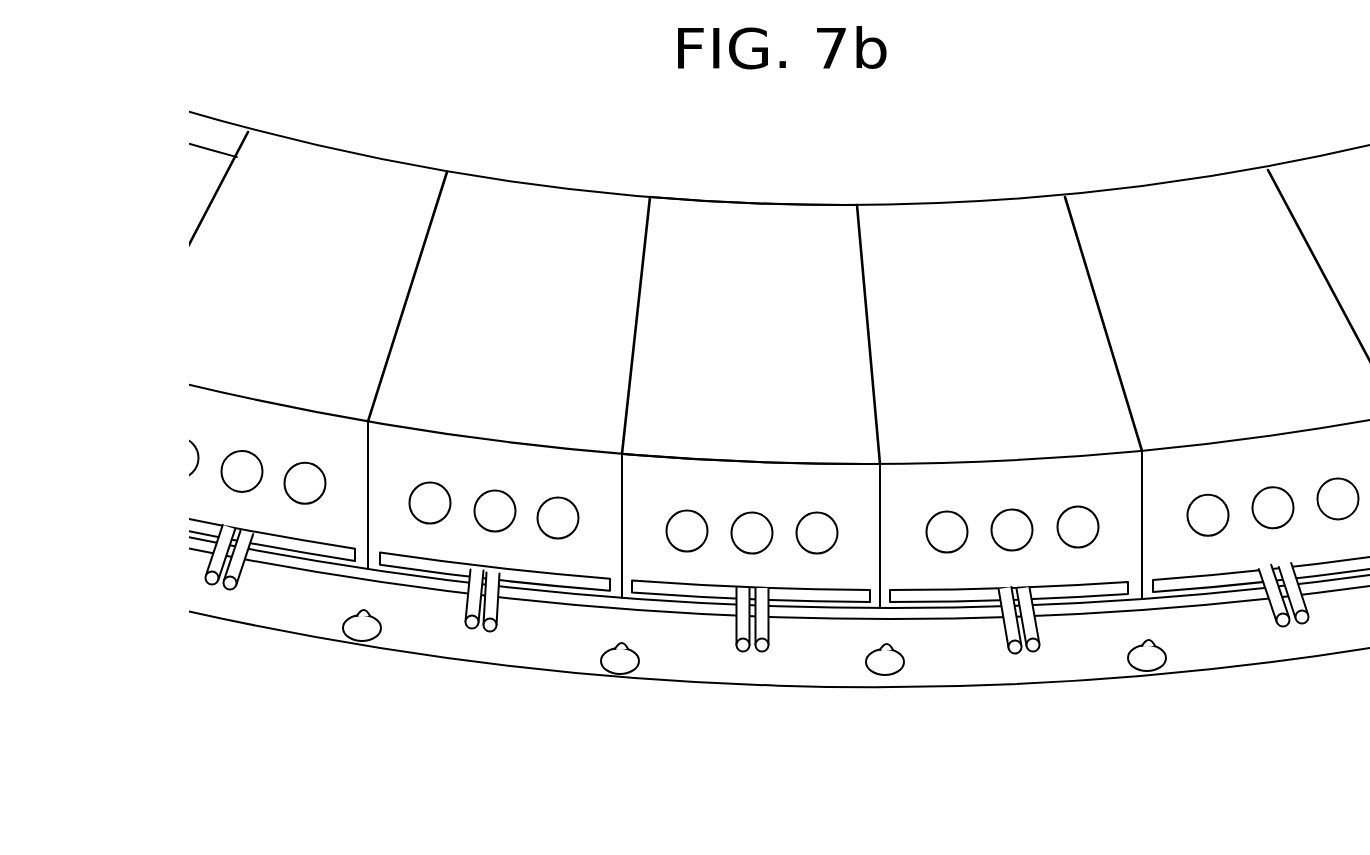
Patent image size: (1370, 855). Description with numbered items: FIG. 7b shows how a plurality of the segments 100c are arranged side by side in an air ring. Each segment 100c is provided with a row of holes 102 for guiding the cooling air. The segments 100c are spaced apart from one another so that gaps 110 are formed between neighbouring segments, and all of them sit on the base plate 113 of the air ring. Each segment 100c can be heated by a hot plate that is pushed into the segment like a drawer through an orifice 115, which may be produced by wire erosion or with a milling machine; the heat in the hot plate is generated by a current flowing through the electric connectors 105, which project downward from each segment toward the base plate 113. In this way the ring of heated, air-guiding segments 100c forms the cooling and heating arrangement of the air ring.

The gap 110 is at (636, 304).
The segment 100c is at (753, 280).
The holes 102 is at (1010, 522).
The electric connectors 105 is at (492, 630).
The base plate 113 is at (1078, 676).
The orifice 115 is at (830, 600).